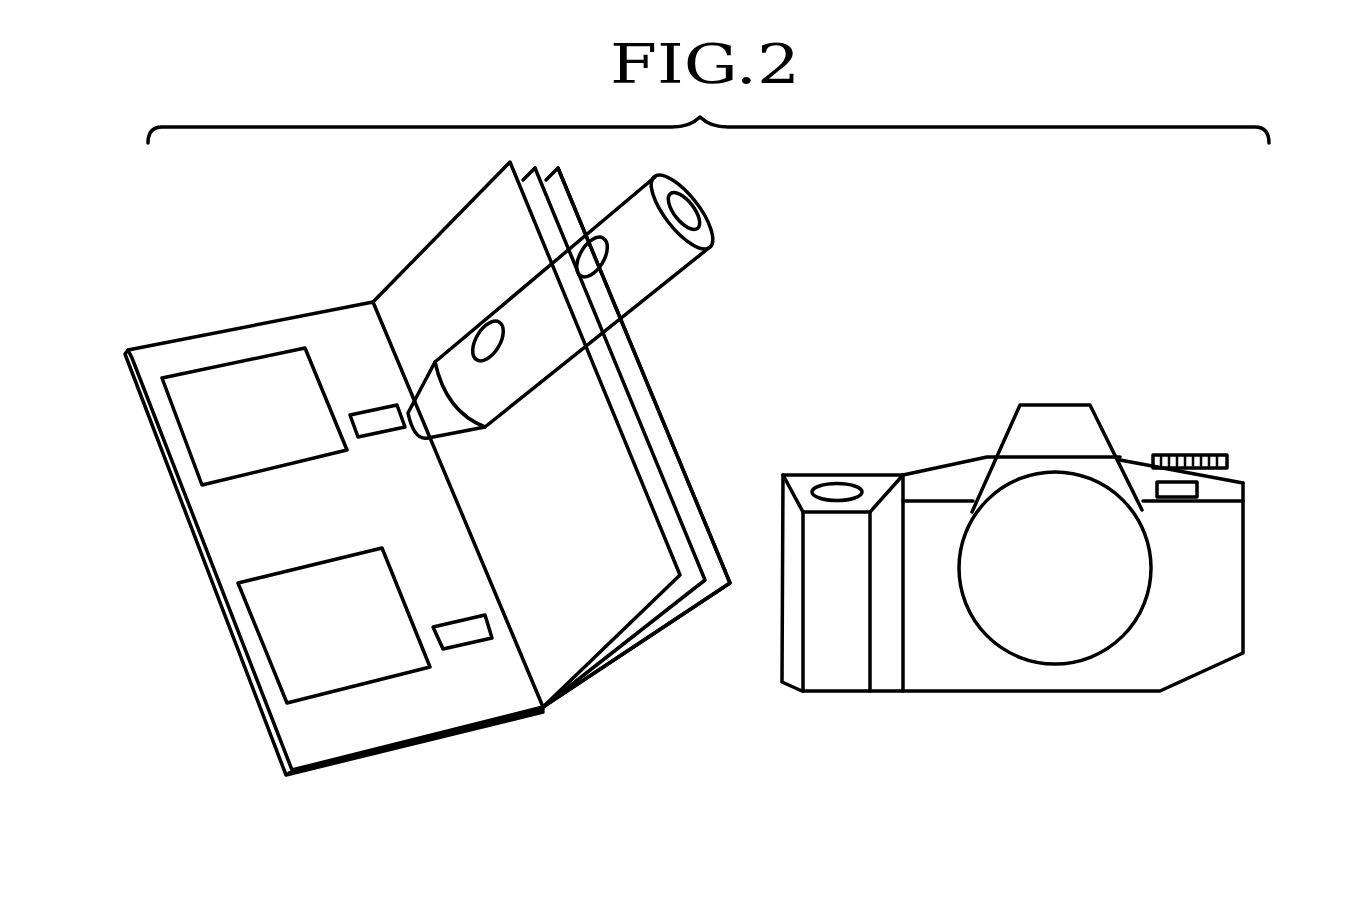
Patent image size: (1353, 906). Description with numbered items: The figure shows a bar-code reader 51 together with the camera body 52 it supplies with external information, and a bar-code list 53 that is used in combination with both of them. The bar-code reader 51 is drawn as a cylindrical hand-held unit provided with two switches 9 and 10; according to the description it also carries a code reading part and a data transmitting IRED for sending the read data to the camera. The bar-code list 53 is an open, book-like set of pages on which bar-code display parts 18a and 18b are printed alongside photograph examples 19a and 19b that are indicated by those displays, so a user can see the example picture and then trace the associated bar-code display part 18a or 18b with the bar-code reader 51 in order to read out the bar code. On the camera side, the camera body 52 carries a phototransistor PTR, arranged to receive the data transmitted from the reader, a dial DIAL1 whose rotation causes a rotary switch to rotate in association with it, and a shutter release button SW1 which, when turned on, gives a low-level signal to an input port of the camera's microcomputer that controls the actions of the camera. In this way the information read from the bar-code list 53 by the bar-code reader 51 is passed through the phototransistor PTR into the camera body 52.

The switch 9 is at (488, 338).
The switch 10 is at (596, 250).
The bar-code display part 18a is at (380, 418).
The bar-code display part 18b is at (462, 632).
The photograph example 19a is at (222, 385).
The photograph example 19b is at (305, 642).
The bar-code reader 51 is at (667, 277).
The camera body 52 is at (1105, 422).
The bar-code list 53 is at (657, 637).
The shutter release button SW1 is at (838, 492).
The dial DIAL1 is at (1202, 453).
The phototransistor PTR is at (1187, 497).